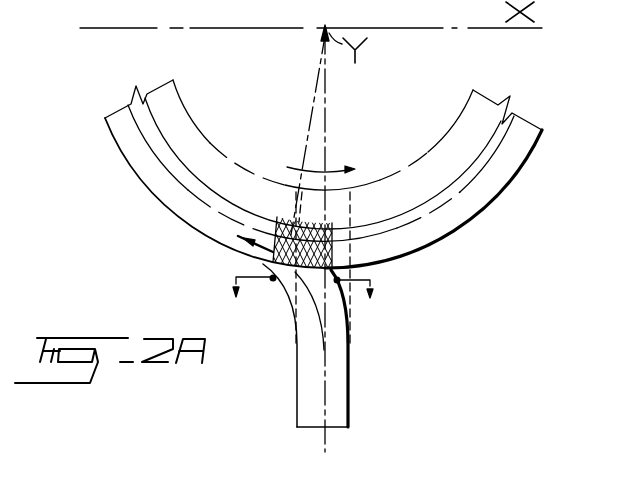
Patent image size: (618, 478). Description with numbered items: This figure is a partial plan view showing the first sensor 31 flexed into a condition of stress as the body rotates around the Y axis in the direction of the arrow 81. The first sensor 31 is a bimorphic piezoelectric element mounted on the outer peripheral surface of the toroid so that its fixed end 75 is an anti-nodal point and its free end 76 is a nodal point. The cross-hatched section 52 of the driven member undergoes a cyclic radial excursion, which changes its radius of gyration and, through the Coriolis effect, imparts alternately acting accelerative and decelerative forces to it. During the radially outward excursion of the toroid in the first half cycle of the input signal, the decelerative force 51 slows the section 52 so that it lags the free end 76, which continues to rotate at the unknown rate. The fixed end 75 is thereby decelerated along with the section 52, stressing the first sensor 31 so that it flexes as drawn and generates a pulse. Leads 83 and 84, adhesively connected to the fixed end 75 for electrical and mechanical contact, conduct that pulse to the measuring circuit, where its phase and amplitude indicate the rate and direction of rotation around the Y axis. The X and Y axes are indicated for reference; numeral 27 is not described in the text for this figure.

The straight pipe outer wall 27 is at (352, 387).
The first sensor 31 is at (308, 368).
The decelerative force 51 is at (243, 241).
The section 52 is at (286, 247).
The fixed end 75 is at (289, 274).
The free end 76 is at (335, 427).
The arrow 81 is at (331, 172).
The lead 83 is at (235, 284).
The lead 84 is at (372, 286).